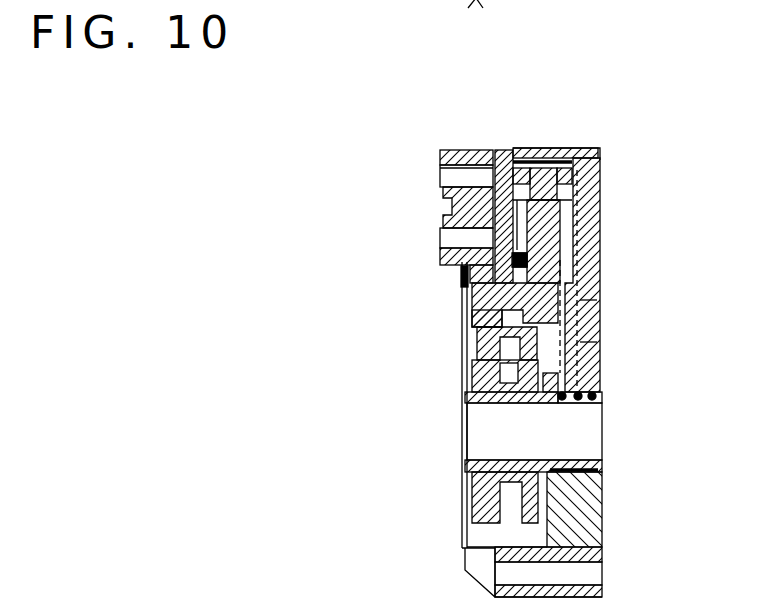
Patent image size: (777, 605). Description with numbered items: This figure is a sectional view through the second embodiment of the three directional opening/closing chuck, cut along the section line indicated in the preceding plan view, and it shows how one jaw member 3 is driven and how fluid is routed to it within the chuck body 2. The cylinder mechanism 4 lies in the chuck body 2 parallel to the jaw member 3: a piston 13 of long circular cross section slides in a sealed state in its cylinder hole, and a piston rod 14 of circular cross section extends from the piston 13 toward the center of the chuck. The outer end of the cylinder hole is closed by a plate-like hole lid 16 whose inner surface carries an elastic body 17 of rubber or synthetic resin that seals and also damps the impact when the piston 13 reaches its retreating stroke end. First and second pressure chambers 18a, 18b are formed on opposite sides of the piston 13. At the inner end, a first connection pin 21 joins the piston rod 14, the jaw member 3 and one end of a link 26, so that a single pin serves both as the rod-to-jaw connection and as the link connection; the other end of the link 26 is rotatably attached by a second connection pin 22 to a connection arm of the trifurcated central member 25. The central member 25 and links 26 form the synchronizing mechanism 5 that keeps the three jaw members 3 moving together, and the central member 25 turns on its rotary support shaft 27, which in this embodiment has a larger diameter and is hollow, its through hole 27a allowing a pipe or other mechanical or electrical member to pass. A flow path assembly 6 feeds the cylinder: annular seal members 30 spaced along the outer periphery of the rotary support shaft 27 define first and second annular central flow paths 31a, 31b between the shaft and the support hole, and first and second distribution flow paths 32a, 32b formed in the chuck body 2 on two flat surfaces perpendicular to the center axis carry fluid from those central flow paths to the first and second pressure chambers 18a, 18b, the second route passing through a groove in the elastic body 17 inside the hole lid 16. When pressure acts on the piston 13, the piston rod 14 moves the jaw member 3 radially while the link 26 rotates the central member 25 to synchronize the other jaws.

The chuck body 2 is at (590, 548).
The jaw member 3 is at (450, 195).
The cylinder mechanism 4 is at (563, 143).
The synchronizing mechanism 5 is at (450, 465).
The flow path assembly 6 is at (599, 353).
The piston 13 is at (545, 150).
The piston rod 14 is at (565, 240).
The hole lid 16 is at (587, 150).
The elastic body 17 is at (508, 150).
The first pressure chamber 18a is at (590, 207).
The second pressure chamber 18b is at (548, 148).
The first connection pin 21 is at (475, 287).
The second connection pin 22 is at (465, 358).
The central member 25 is at (458, 382).
The link 26 is at (470, 318).
The rotary support shaft 27 is at (493, 452).
The through hole 27a is at (483, 425).
The annular seal member 30 is at (557, 473).
The first central flow path 31a is at (596, 404).
The second central flow path 31b is at (586, 398).
The first distribution flow path 32a is at (597, 343).
The second distribution flow path 32b is at (597, 300).